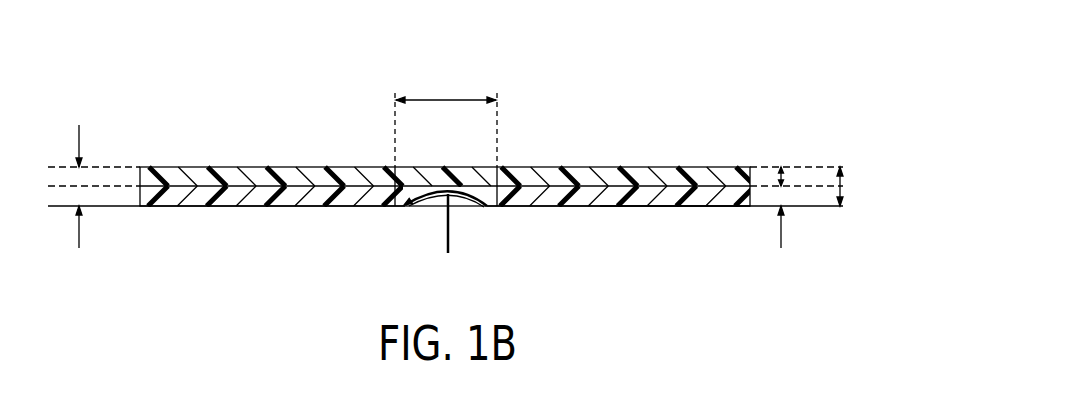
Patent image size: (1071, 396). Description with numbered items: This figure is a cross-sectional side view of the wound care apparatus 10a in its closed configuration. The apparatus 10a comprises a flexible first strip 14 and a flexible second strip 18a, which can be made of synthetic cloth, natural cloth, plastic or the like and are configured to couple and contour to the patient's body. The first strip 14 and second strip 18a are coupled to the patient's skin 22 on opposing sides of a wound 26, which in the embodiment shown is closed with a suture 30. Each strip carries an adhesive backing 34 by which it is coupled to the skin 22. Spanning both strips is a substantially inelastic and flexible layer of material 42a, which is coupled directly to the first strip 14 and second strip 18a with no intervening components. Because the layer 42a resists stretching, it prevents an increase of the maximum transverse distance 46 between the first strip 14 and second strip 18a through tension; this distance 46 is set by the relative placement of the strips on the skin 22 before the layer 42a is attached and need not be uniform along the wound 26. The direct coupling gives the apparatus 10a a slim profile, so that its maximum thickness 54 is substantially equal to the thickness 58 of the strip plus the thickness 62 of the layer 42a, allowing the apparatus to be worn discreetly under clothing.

The wound care apparatus 10a is at (150, 144).
The layer of material 42a is at (288, 177).
The first strip 14 is at (262, 197).
The second strip 18a is at (652, 197).
The skin 22 is at (125, 208).
The adhesive backing 34 is at (580, 207).
The wound 26 is at (417, 220).
The suture 30 is at (483, 207).
The maximum transverse distance 46 is at (450, 97).
The thickness of the layer 62 is at (80, 203).
The maximum thickness 54 is at (846, 186).
The thickness of the strip 58 is at (783, 242).